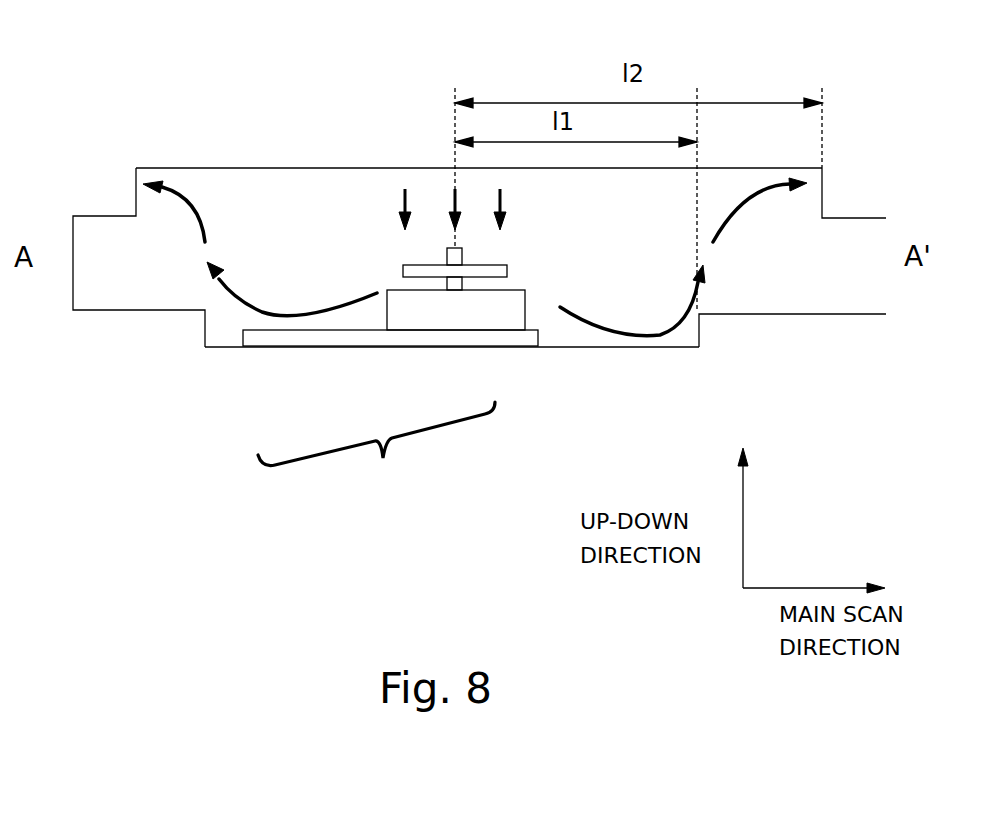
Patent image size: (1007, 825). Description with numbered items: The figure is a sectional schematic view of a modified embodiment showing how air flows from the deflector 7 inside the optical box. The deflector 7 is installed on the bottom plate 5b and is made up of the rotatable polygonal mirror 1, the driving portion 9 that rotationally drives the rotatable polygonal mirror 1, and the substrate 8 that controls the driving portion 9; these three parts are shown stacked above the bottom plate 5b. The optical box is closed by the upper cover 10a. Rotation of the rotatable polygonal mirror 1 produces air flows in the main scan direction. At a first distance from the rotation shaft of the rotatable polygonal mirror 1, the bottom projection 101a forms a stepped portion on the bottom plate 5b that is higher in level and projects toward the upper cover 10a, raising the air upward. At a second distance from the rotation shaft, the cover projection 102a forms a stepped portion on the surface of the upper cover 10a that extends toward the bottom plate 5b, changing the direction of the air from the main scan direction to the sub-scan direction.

The upper cover 10a is at (273, 168).
The cover projection 102a is at (823, 193).
The bottom projection 101a is at (702, 335).
The bottom plate 5b is at (595, 343).
The substrate 8 is at (292, 341).
The driving portion 9 is at (507, 317).
The rotatable polygonal mirror 1 is at (423, 270).
The deflector 7 is at (376, 447).